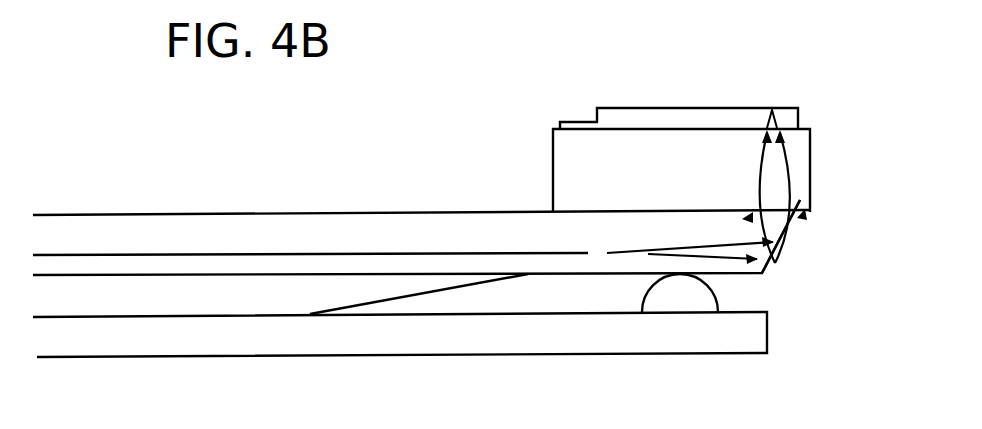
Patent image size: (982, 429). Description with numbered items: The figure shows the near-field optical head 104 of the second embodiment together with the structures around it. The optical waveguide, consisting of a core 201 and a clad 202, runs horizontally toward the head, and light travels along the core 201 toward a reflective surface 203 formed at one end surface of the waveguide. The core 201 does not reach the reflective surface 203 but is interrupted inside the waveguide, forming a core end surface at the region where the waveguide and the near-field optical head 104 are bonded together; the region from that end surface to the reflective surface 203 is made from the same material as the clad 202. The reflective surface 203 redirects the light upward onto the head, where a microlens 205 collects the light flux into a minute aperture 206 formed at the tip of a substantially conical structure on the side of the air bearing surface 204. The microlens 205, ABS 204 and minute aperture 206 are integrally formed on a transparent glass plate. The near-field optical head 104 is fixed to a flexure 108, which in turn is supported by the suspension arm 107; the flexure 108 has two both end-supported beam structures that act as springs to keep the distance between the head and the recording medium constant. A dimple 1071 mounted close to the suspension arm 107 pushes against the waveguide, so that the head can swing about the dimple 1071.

The clad 202 is at (183, 230).
The core 201 is at (323, 252).
The near-field optical head 104 is at (552, 195).
The air bearing surface (ABS) 204 is at (603, 107).
The minute aperture 206 is at (773, 112).
The microlens 205 is at (812, 212).
The reflective surface 203 is at (785, 262).
The flexure 108 is at (355, 315).
The suspension arm 107 is at (508, 353).
The dimple 1071 is at (680, 298).